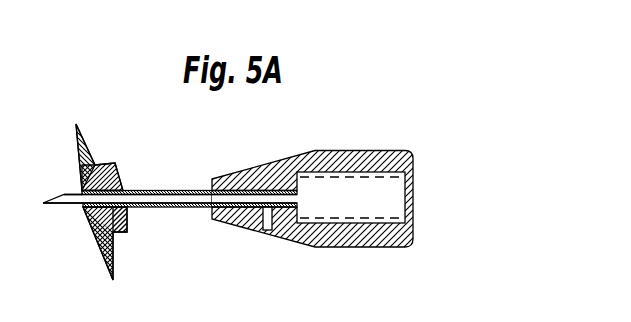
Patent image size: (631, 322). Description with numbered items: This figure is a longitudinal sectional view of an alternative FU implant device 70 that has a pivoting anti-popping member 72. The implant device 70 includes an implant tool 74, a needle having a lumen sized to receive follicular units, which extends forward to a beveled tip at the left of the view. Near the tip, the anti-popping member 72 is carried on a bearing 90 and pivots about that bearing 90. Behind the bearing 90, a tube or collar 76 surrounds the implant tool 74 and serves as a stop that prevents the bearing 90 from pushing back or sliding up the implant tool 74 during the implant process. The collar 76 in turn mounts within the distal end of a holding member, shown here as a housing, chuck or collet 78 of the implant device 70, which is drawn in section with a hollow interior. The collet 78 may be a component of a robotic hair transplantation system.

The FU implant device 70 is at (88, 273).
The pivoting anti-popping member 72 is at (73, 155).
The implant tool 74 is at (67, 206).
The tube or collar 76 is at (177, 189).
The collet 78 is at (340, 150).
The bearing 90 is at (122, 186).